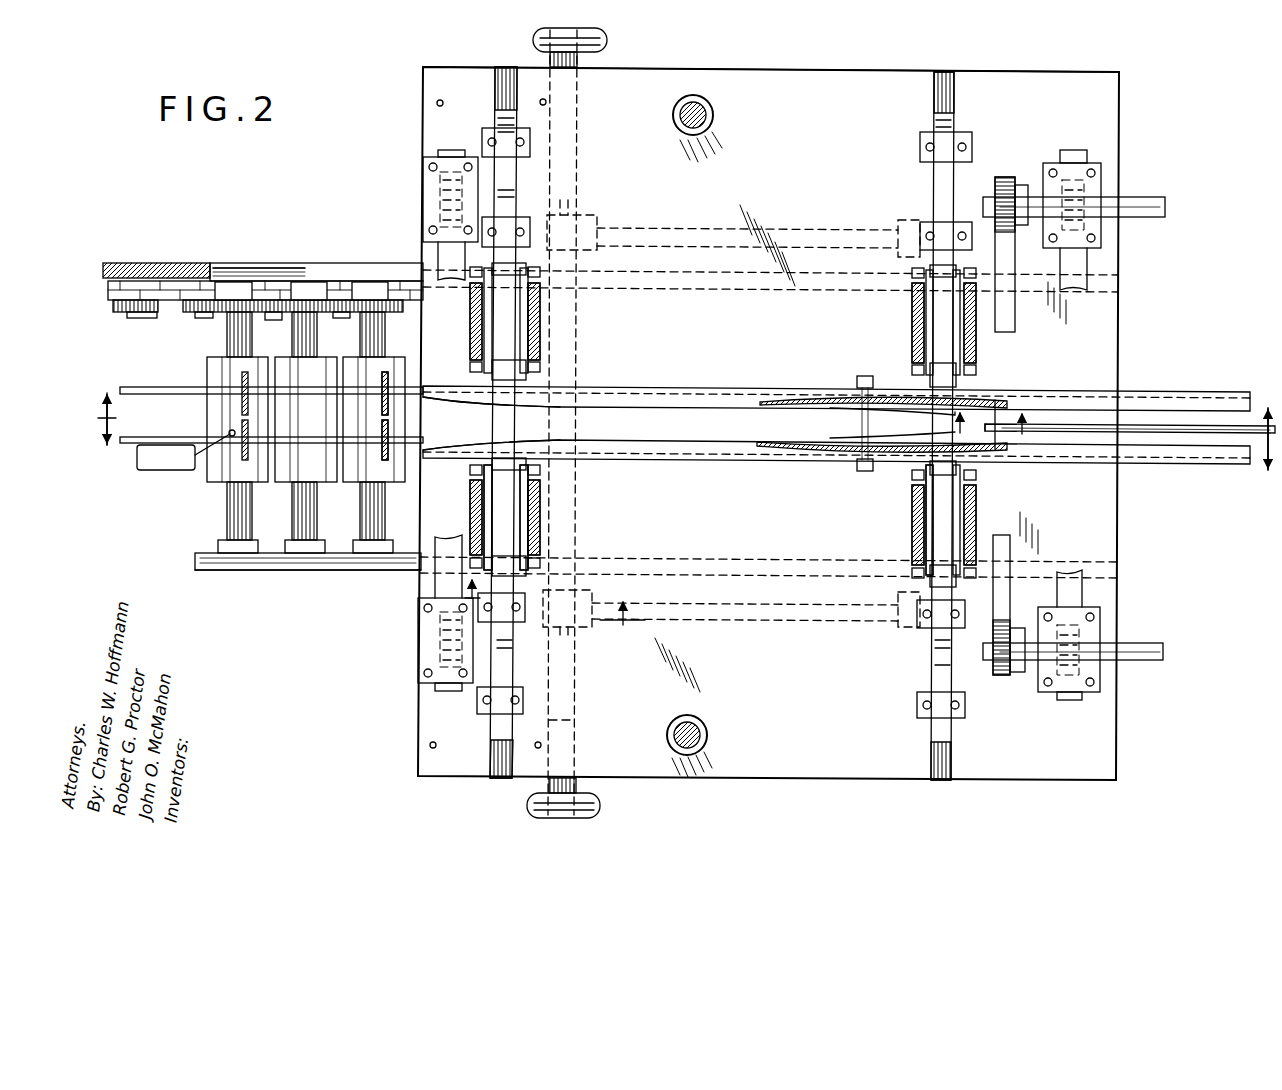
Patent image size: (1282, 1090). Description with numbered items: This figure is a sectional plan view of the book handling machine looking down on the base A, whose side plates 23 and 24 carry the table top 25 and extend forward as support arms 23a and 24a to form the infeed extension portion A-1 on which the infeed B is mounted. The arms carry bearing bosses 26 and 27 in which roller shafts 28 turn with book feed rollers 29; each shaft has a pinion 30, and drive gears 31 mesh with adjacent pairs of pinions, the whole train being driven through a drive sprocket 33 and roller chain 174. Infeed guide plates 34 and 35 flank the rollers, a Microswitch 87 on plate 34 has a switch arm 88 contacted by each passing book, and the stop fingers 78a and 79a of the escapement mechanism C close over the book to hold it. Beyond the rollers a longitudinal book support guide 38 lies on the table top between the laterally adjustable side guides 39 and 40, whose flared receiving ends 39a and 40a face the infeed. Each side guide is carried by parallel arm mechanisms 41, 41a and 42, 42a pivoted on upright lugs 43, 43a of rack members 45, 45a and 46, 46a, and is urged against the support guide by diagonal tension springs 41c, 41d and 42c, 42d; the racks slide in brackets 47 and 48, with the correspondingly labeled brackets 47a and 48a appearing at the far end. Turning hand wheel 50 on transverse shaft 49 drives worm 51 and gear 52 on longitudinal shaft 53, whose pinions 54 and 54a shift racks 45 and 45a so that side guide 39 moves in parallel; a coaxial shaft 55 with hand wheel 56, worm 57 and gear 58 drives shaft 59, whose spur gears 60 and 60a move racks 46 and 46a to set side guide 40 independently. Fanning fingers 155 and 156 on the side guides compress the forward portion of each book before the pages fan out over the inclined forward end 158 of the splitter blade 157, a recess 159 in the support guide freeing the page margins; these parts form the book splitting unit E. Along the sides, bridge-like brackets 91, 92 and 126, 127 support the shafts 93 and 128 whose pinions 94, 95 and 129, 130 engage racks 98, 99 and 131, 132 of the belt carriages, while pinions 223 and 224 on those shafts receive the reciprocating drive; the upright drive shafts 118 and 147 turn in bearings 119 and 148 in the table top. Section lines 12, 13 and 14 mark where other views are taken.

The base A is at (1125, 122).
The table top 25 is at (797, 88).
The shaft 55 is at (578, 113).
The hand wheel 56 is at (608, 42).
The hand wheel 50 is at (602, 803).
The worm 57 is at (585, 217).
The gear 58 is at (575, 210).
The longitudinal shaft 59 is at (678, 228).
The spur gear 60a is at (915, 222).
The side plate 24 is at (693, 290).
The gear 52 is at (576, 585).
The longitudinal shaft 53 is at (712, 621).
The side plate 23 is at (715, 558).
The worm 51 is at (575, 632).
The transverse shaft 49 is at (580, 692).
The rack member 46 is at (508, 118).
The bracket 48 is at (486, 130).
The spur gear 60 is at (506, 195).
The rack member 45 is at (500, 668).
The pinion 54 is at (505, 648).
The bracket 47 is at (480, 702).
The rack member 46a is at (933, 116).
The bearing block 48a is at (958, 134).
The bearing block 47a is at (927, 618).
The pinion 54a is at (935, 648).
The rack member 45a is at (933, 672).
The parallel arm mechanism 42 is at (490, 312).
The tension spring 42c is at (470, 338).
The parallel arm mechanism 41 is at (484, 498).
The tension spring 41c is at (470, 517).
The upright lug 43 is at (500, 550).
The parallel arm mechanism 42a is at (958, 330).
The tension spring 42d is at (912, 310).
The parallel arm mechanism 41a is at (926, 515).
The tension spring 41d is at (912, 494).
The upright lug 43a is at (930, 555).
The book side guide 40 is at (650, 385).
The flared book receiving end portion 40a is at (455, 402).
The book side guide 39 is at (680, 460).
The flared book receiving end portion 39a is at (462, 442).
The book support guide 38 is at (675, 424).
The book fanning finger 156 is at (900, 410).
The book fanning finger 155 is at (955, 432).
The recess 159 is at (996, 400).
The inclined forward end 158 is at (1005, 424).
The splitter blade 157 is at (1170, 435).
The section line 14 is at (998, 430).
The book splitting unit E is at (888, 383).
The section line 13 is at (682, 442).
The pinion 224 is at (1003, 178).
The longitudinal shaft 128 is at (1130, 197).
The bridge-like bracket 127 is at (1101, 170).
The pinion 130 is at (1100, 178).
The rack member 132 is at (1090, 270).
The pinion 223 is at (1005, 676).
The rotatable shaft 93 is at (1120, 643).
The bridge-like bracket 92 is at (1101, 612).
The pinion 95 is at (1100, 672).
The rack 99 is at (1082, 588).
The rack member 131 is at (438, 155).
The bridge-like bracket 126 is at (432, 178).
The pinion 129 is at (438, 196).
The pinion 94 is at (420, 622).
The bridge-like bracket 91 is at (418, 652).
The rack 98 is at (440, 570).
The section line 12 is at (542, 612).
The upright shaft 147 is at (714, 112).
The fixed bearing 148 is at (712, 122).
The upright shaft 118 is at (702, 722).
The bearing 119 is at (707, 738).
The infeed B is at (225, 512).
The drive sprocket 33 is at (122, 262).
The infeed support arm 24a is at (195, 250).
The roller chain 174 is at (215, 260).
The bearing boss 27 is at (233, 282).
The drive gear 31 is at (118, 312).
The pinion 30 is at (270, 322).
The roller shaft 28 is at (227, 520).
The book feed roller 29 is at (212, 357).
The infeed guide plate 35 is at (128, 378).
The infeed guide plate 34 is at (145, 437).
The escapement mechanism C is at (236, 380).
The switch arm 88 is at (225, 434).
The Microswitch 87 is at (175, 468).
The stop finger 79a is at (390, 382).
The stop finger 78a is at (392, 432).
The bearing boss 26 is at (200, 550).
The infeed support arm 23a is at (245, 571).
The infeed extension portion A-1 is at (290, 575).